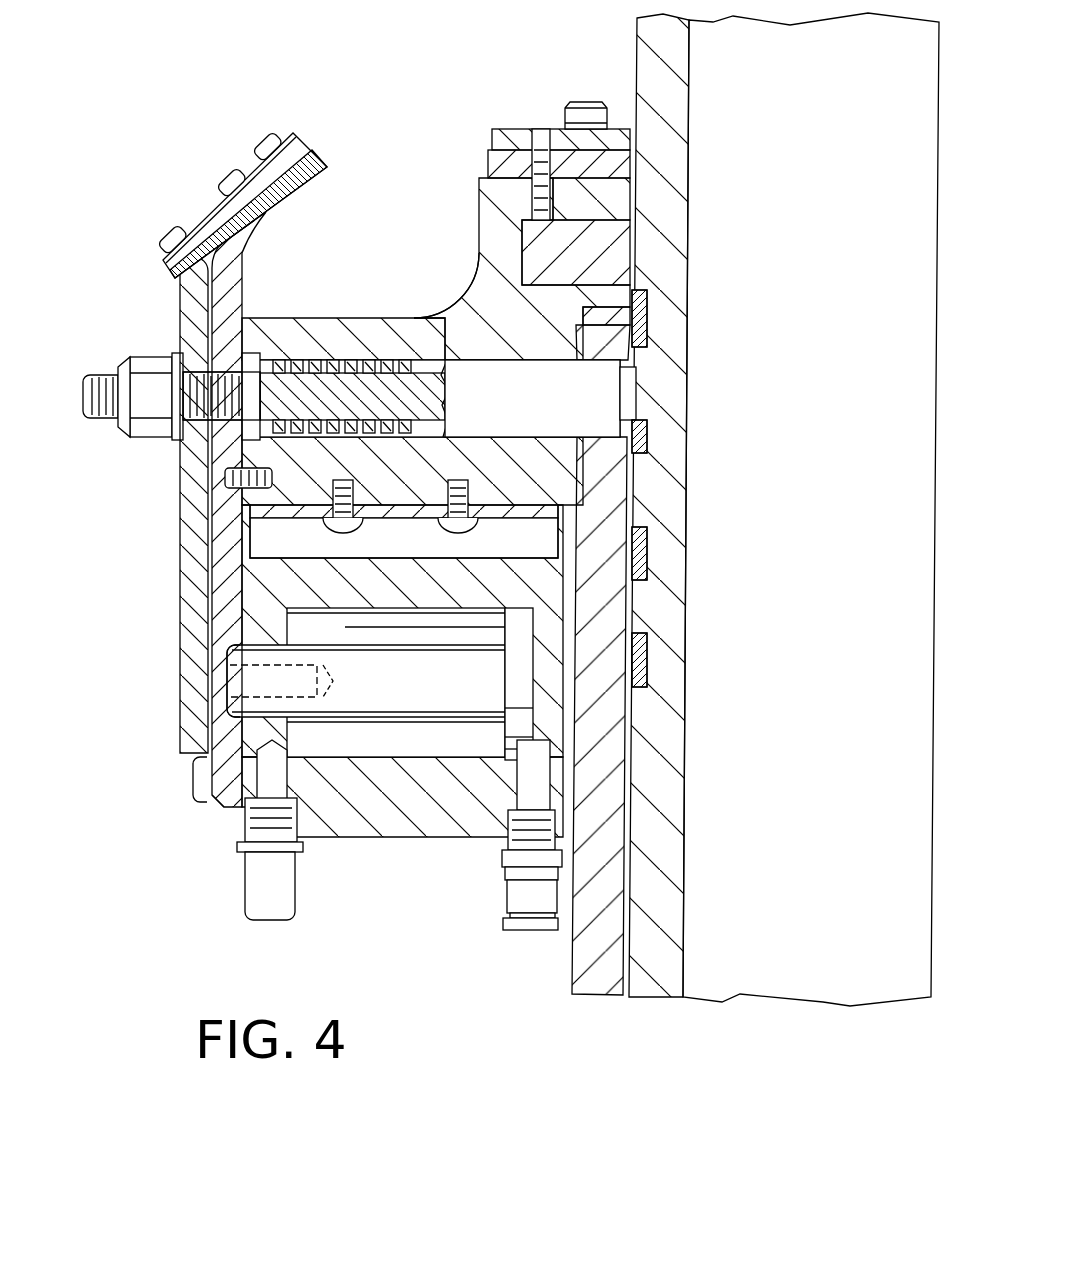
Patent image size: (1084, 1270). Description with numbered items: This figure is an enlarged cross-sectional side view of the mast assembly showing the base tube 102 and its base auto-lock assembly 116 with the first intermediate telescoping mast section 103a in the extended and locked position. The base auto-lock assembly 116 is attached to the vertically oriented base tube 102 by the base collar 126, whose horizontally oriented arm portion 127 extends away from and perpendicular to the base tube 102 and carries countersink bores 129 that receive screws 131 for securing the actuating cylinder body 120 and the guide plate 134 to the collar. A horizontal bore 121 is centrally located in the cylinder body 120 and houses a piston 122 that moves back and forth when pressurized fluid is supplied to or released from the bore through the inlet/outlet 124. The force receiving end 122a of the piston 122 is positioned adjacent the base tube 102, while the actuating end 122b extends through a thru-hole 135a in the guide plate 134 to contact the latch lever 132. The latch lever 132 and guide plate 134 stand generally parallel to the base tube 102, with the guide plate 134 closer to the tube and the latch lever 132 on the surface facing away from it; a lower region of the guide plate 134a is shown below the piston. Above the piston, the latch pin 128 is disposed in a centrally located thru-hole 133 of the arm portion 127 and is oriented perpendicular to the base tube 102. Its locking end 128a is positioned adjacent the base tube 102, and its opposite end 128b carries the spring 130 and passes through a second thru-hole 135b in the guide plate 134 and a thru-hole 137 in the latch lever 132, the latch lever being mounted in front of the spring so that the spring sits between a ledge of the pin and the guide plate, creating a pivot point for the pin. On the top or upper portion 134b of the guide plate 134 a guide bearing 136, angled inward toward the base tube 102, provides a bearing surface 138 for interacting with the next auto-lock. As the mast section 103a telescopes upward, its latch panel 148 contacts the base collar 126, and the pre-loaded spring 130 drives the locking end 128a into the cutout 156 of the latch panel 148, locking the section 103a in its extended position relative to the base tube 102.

The base tube 102 is at (598, 985).
The first intermediate telescoping mast section 103a is at (648, 985).
The base auto-lock assembly 116 is at (186, 781).
The actuating cylinder body 120 is at (403, 827).
The horizontal bore 121 is at (305, 623).
The piston 122 is at (409, 694).
The force receiving end 122a is at (527, 695).
The actuating end 122b is at (245, 708).
The inlet/outlet 124 is at (533, 903).
The base collar 126 is at (479, 200).
The arm portion 127 is at (278, 327).
The latch pin 128 is at (517, 409).
The locking end 128a is at (637, 393).
The opposite end 128b is at (93, 370).
The countersink bores 129 is at (452, 478).
The spring 130 is at (337, 357).
The screws 131 is at (212, 488).
The latch lever 132 is at (193, 583).
The thru-hole 133 is at (423, 345).
The guide plate 134 is at (225, 314).
The plate lower end 134a is at (225, 798).
The top or upper portion 134b is at (323, 163).
The thru-hole 135a is at (218, 673).
The second thru-hole 135b is at (222, 483).
The guide bearing 136 is at (188, 252).
The thru-hole 137 is at (192, 428).
The bearing surface 138 is at (210, 194).
The latch panel 148 is at (641, 313).
The cutout 156 is at (641, 360).